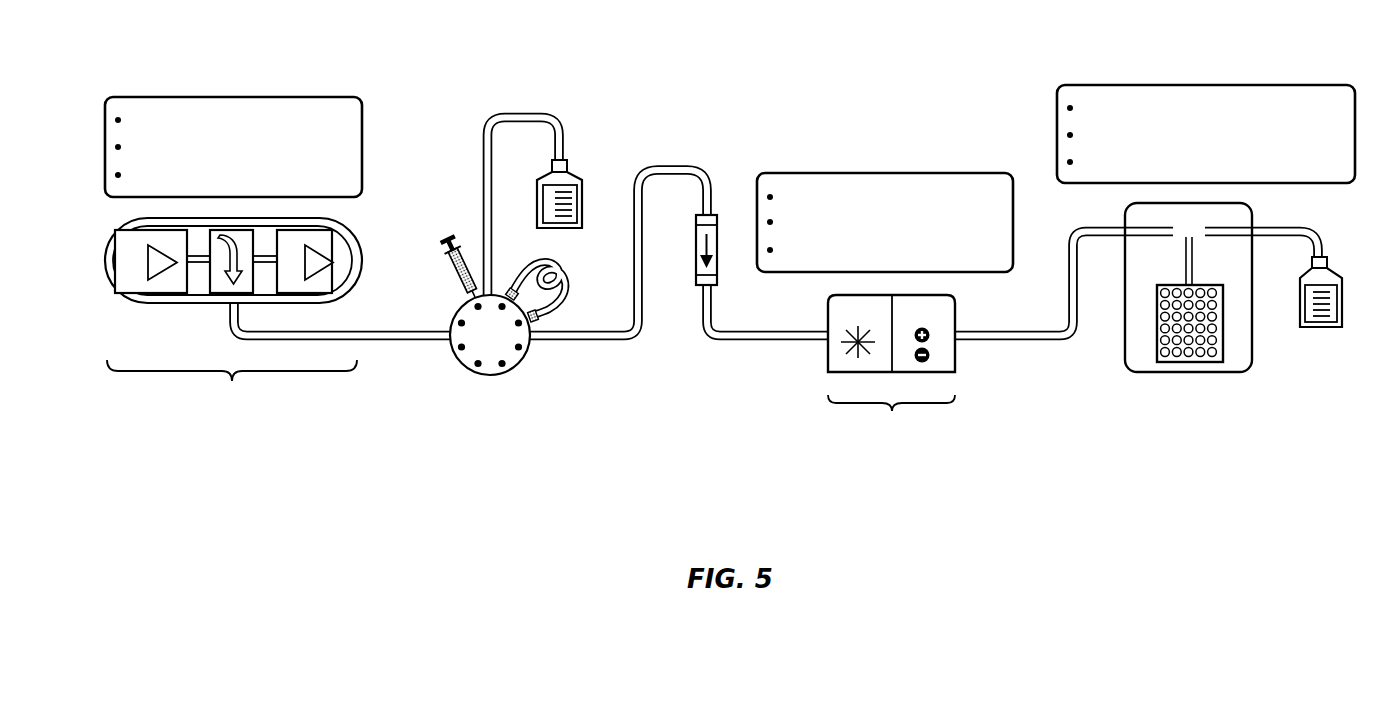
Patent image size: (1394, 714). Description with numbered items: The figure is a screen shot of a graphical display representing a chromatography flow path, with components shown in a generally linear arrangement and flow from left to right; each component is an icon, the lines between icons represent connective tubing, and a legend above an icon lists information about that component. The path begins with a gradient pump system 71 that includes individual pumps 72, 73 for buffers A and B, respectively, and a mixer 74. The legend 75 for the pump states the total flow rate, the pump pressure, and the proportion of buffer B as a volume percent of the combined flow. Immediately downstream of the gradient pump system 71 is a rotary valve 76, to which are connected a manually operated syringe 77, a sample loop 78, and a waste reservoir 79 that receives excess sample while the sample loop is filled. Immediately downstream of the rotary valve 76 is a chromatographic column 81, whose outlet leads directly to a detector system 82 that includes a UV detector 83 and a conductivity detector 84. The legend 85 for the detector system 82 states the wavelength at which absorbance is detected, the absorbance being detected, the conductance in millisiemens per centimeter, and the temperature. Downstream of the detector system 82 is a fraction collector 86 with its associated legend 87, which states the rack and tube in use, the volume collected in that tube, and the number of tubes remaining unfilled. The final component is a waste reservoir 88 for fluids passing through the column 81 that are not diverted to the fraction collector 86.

The gradient pump system 71 is at (233, 314).
The pump for buffer A 72 is at (157, 250).
The pump for buffer B 73 is at (313, 249).
The mixer 74 is at (221, 290).
The legend 75 is at (258, 97).
The rotary valve 76 is at (490, 376).
The manually operated syringe 77 is at (474, 263).
The sample loop 78 is at (557, 267).
The waste reservoir 79 is at (575, 172).
The chromatographic column 81 is at (718, 236).
The detector system 82 is at (891, 368).
The UV detector 83 is at (828, 352).
The conductivity detector 84 is at (955, 352).
The legend 85 is at (893, 173).
The fraction collector 86 is at (1183, 372).
The legend 87 is at (1152, 85).
The waste reservoir 88 is at (1333, 267).